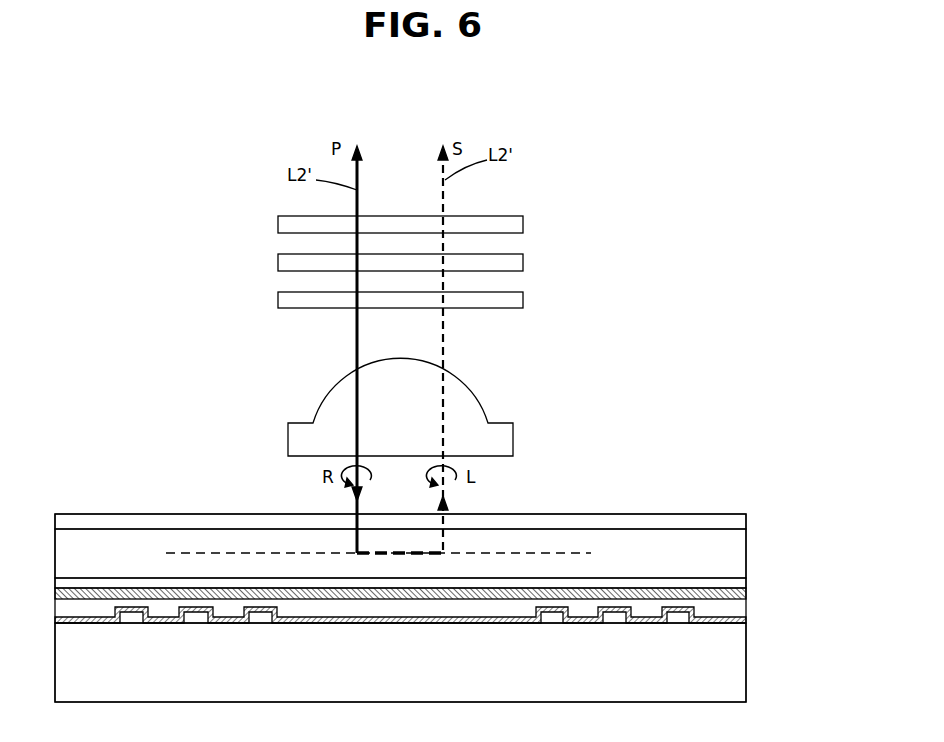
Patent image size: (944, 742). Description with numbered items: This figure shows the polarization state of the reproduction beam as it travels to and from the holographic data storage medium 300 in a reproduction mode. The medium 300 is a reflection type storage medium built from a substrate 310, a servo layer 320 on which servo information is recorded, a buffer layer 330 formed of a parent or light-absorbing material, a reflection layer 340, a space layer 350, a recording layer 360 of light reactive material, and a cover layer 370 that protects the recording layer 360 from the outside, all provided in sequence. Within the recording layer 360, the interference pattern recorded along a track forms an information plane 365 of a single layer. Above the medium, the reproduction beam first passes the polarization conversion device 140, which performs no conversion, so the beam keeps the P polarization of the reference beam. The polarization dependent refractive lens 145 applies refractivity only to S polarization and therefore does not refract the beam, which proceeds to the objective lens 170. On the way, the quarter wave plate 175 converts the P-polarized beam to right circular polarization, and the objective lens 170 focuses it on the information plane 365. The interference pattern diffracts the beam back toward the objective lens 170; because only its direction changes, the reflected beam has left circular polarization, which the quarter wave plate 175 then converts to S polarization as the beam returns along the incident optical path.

The polarization conversion device 140 is at (523, 225).
The polarization dependent refractive lens 145 is at (523, 263).
The quarter wave plate 175 is at (523, 300).
The objective lens 170 is at (513, 437).
The holographic data storage medium 300 is at (702, 485).
The cover layer 370 is at (746, 522).
The recording layer 360 is at (733, 550).
The information plane 365 is at (211, 553).
The space layer 350 is at (741, 583).
The reflection layer 340 is at (746, 595).
The buffer layer 330 is at (738, 608).
The servo layer 320 is at (745, 622).
The substrate 310 is at (741, 670).